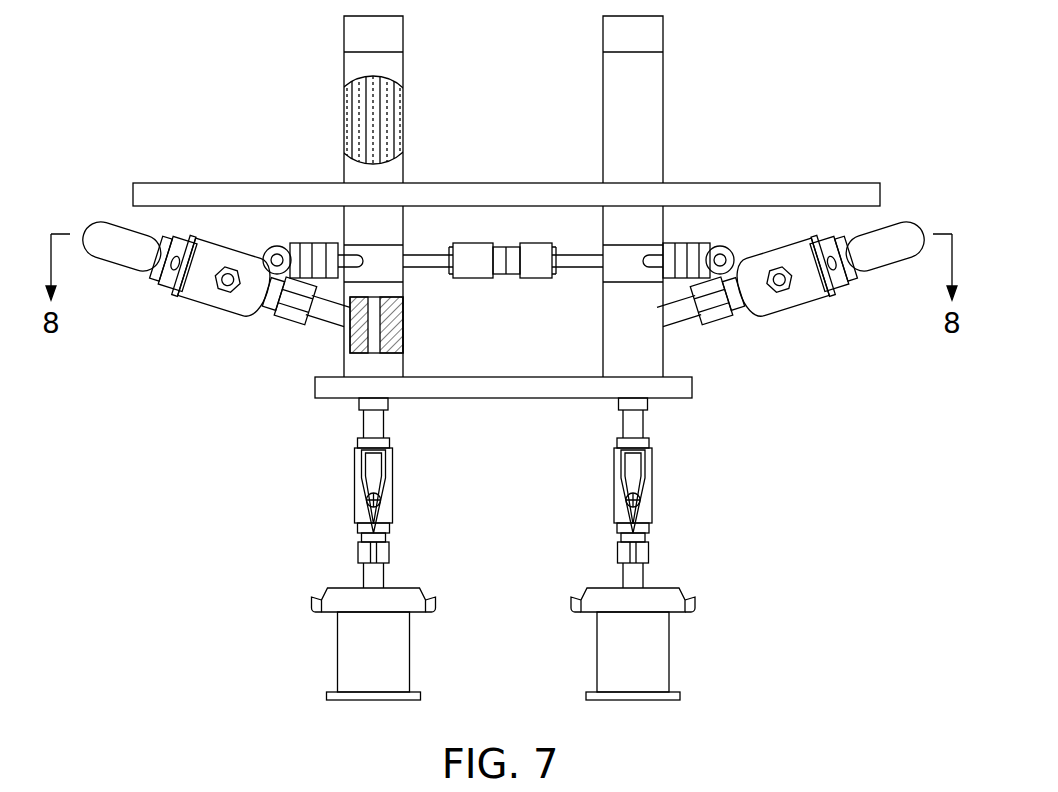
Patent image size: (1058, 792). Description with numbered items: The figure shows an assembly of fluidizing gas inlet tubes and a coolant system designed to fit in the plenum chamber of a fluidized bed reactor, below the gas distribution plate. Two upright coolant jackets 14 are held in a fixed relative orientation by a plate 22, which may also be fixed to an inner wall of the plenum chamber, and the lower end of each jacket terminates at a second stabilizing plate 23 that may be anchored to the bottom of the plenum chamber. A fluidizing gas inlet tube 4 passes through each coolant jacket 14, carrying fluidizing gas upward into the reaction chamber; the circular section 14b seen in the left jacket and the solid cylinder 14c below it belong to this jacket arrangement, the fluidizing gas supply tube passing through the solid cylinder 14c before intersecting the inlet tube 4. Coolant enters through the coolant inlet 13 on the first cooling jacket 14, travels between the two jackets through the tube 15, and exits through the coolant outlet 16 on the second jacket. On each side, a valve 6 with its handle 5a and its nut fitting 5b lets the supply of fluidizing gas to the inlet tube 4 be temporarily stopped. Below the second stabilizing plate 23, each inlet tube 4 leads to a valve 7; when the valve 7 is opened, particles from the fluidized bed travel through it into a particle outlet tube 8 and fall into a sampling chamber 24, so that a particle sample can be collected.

The fluidizing gas inlet tube 4 is at (365, 131).
The valve handle 5a is at (143, 300).
The valve nut fitting 5b is at (317, 328).
The valve 6 is at (243, 317).
The valve 7 is at (392, 475).
The particle outlet tube 8 is at (384, 577).
The coolant inlet 13 is at (312, 244).
The coolant jacket 14 is at (603, 115).
The column bore with tubes 14b is at (358, 106).
The solid cylinder 14c is at (403, 335).
The tube 15 is at (570, 268).
The coolant outlet 16 is at (710, 244).
The plate 22 is at (778, 183).
The second stabilizing plate 23 is at (690, 397).
The sampling chamber 24 is at (410, 652).